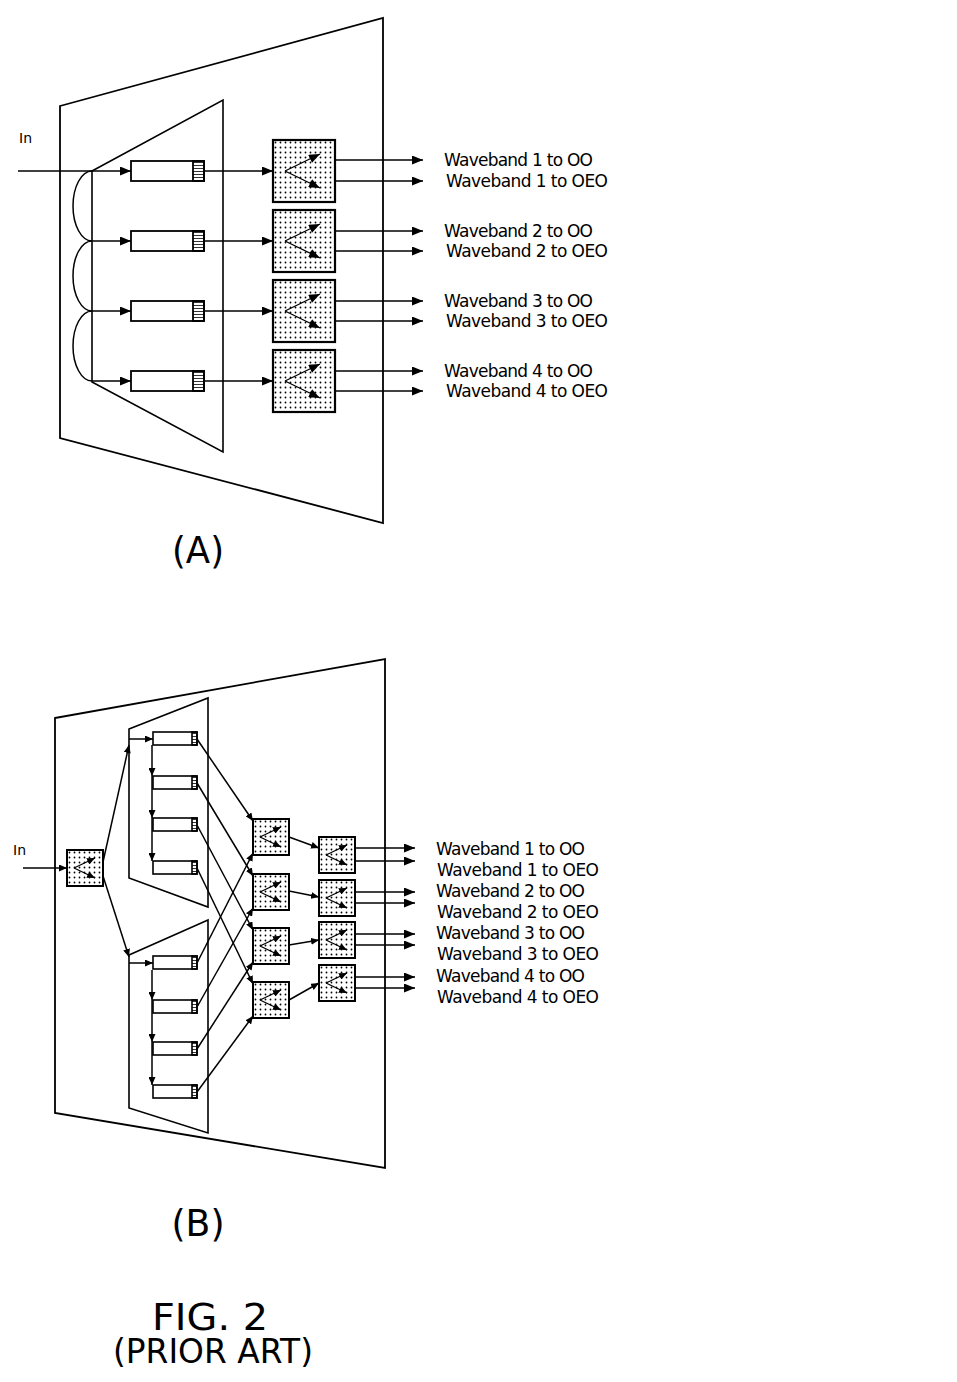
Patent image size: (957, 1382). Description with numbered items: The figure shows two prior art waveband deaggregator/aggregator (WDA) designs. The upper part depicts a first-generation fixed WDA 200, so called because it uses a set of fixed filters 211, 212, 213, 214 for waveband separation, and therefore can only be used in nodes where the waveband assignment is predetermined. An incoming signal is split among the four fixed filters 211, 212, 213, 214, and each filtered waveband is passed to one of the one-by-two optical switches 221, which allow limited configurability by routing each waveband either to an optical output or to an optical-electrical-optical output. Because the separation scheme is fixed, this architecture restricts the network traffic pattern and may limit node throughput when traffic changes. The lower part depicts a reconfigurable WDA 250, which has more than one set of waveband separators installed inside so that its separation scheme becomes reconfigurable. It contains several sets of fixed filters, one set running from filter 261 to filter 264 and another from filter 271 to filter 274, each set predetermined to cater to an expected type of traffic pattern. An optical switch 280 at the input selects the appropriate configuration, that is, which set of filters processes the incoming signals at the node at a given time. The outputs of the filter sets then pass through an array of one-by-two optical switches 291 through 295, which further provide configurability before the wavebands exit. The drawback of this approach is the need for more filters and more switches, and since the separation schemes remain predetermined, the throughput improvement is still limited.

The fixed waveband deaggregator/aggregator 200 is at (158, 506).
The fixed filter 211 is at (170, 158).
The fixed filter 212 is at (170, 228).
The fixed filter 213 is at (170, 298).
The fixed filter 214 is at (170, 368).
The 1×2 optical switches 221 is at (304, 261).
The reconfigurable waveband deaggregator/aggregator 250 is at (230, 1182).
The fixed filter 261 is at (176, 727).
The fixed filter 264 is at (176, 854).
The fixed filter 271 is at (175, 951).
The fixed filter 274 is at (175, 1105).
The optical switch 280 is at (86, 853).
The 1×2 optical switches 291 is at (273, 903).
The 1×2 optical switches 295 is at (335, 906).